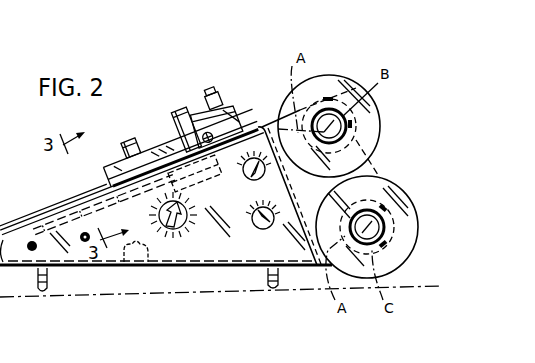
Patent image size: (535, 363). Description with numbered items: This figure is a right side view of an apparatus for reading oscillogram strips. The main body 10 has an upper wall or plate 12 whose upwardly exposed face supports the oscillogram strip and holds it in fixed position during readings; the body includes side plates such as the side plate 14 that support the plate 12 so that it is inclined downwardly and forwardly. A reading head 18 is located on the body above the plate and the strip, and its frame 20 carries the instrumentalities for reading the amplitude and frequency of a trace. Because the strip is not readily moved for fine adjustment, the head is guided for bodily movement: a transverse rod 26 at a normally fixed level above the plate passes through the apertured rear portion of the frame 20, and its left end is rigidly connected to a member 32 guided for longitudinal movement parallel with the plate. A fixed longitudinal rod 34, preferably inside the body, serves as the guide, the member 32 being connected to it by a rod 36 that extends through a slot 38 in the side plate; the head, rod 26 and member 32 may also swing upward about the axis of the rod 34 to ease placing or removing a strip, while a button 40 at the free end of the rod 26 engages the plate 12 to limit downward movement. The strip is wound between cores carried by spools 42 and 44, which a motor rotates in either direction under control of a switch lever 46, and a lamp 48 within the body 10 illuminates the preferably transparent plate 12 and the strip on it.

The main body 10 is at (222, 275).
The upper wall or plate 12 is at (62, 204).
The side plate 14 is at (232, 258).
The reading head 18 is at (214, 80).
The frame 20 is at (158, 143).
The transverse rod 26 is at (234, 111).
The member 32 is at (110, 175).
The longitudinal rod 34 is at (199, 166).
The rod 36 is at (110, 197).
The slot 38 is at (38, 218).
The button 40 is at (222, 134).
The spool 42 is at (347, 136).
The spool 44 is at (378, 228).
The switch lever 46 is at (32, 252).
The lamp 48 is at (152, 262).